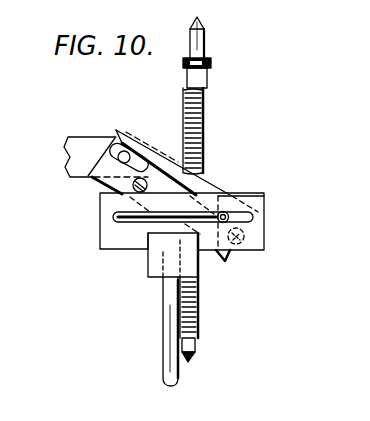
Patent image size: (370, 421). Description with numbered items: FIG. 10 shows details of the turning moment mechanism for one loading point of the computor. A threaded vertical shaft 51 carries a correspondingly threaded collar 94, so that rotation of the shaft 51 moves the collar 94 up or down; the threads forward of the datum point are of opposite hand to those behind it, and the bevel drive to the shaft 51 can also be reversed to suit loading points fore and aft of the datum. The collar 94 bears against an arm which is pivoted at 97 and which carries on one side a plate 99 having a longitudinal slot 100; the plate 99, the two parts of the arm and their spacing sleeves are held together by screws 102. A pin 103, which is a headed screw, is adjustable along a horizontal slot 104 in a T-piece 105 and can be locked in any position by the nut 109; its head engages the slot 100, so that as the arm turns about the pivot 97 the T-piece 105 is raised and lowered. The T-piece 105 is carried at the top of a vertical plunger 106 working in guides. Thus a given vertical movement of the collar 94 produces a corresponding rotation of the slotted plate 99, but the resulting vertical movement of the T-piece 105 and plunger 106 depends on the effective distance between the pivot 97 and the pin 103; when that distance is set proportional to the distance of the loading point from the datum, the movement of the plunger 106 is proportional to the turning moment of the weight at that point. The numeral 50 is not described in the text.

The locating pin 50 is at (212, 66).
The vertical shaft 51 is at (207, 103).
The threaded collar 94 is at (205, 268).
The pivot 97 is at (120, 138).
The plate 99 is at (205, 166).
The longitudinal slot 100 is at (152, 152).
The screws 102 is at (120, 193).
The pin 103 is at (258, 212).
The horizontal slot 104 is at (240, 222).
The T-piece 105 is at (122, 237).
The vertical plunger 106 is at (165, 327).
The nut 109 is at (229, 211).